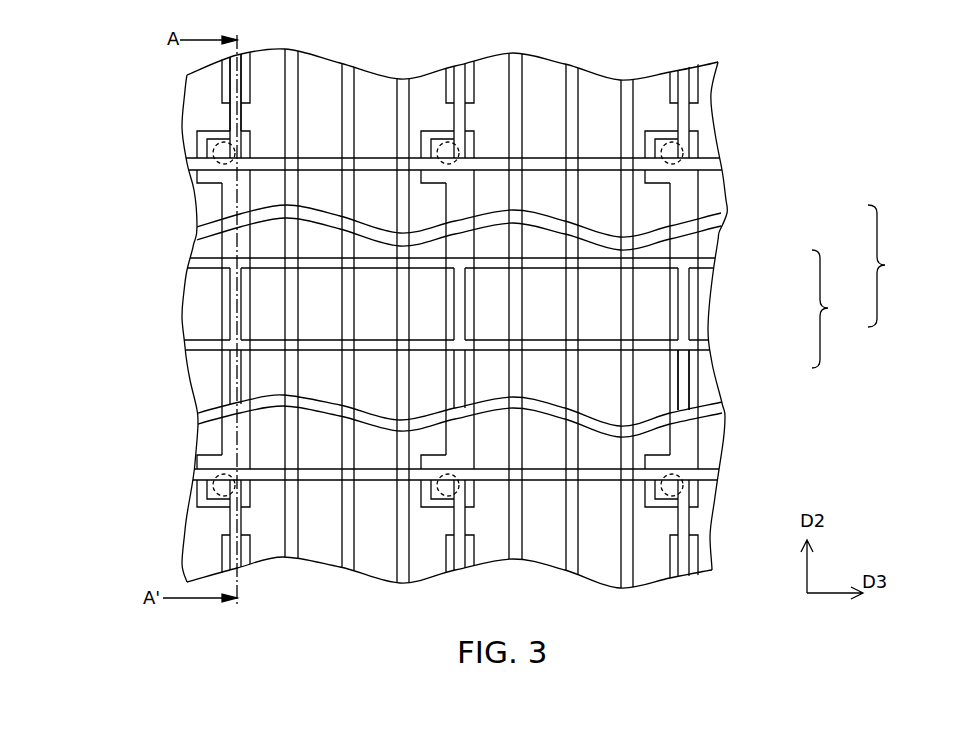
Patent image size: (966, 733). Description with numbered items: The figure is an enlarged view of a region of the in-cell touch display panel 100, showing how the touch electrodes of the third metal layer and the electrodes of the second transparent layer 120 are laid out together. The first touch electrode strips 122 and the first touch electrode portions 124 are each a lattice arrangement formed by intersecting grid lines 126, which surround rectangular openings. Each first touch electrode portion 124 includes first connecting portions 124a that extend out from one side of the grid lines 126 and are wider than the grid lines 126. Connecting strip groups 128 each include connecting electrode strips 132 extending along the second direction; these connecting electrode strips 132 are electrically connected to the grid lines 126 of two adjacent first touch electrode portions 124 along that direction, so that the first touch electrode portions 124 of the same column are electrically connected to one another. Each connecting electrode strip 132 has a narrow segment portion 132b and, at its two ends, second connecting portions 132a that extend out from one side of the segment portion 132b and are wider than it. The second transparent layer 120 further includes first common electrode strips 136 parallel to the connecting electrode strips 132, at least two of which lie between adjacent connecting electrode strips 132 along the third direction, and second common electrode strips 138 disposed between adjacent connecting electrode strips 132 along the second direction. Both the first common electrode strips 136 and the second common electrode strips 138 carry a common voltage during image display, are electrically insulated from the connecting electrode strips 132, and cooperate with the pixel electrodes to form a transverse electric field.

The in-cell touch display panel 100 is at (852, 82).
The second transparent layer 120 is at (894, 266).
The first touch electrode strip 122 is at (225, 307).
The first touch electrode portion 124 is at (188, 320).
The first connecting portion 124a is at (217, 141).
The grid line 126 is at (235, 93).
The connecting strip group 128 is at (837, 309).
The connecting electrode strip 132 is at (630, 112).
The second connecting portion 132a is at (205, 137).
The segment portion 132b is at (690, 397).
The first common electrode strip 136 is at (352, 90).
The second common electrode strip 138 is at (693, 87).